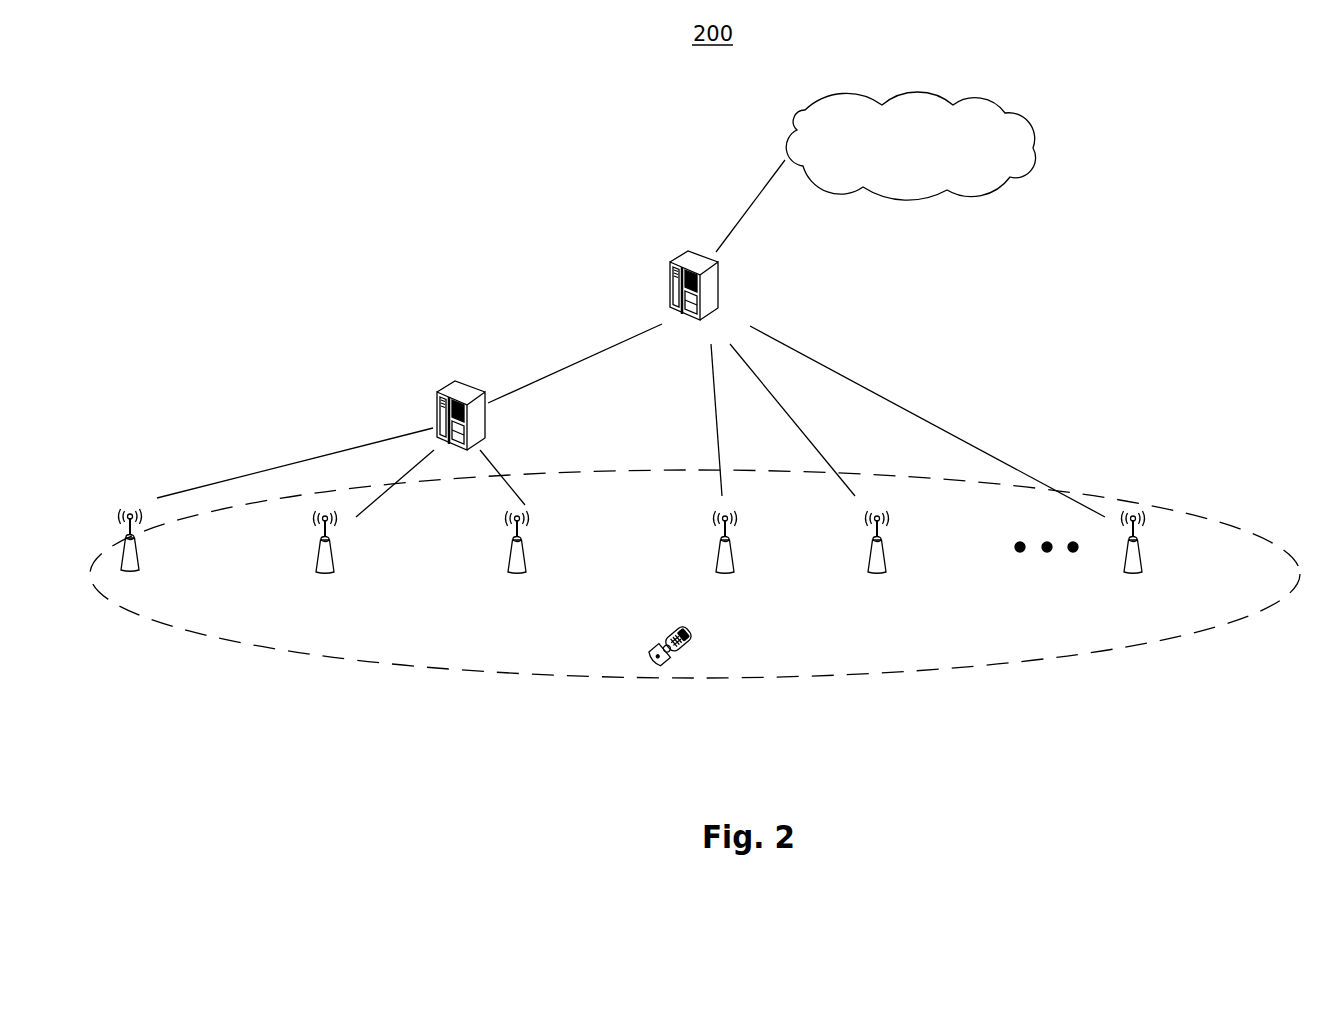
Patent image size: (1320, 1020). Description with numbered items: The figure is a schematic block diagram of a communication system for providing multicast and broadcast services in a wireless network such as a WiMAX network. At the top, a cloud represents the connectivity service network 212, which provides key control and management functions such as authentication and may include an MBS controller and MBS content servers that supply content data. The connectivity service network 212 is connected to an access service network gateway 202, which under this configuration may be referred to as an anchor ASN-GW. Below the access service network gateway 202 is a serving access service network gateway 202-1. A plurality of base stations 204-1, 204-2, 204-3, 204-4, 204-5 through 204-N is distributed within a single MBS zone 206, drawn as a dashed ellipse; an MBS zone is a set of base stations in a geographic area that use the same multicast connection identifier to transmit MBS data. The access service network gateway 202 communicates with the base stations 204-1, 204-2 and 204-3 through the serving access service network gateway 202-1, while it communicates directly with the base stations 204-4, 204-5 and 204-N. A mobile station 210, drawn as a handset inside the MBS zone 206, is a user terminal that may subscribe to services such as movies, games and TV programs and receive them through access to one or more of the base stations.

The access service network gateway 202 is at (723, 290).
The serving access service network gateway 202-1 is at (490, 423).
The base station 204-1 is at (140, 552).
The base station 204-2 is at (334, 547).
The base station 204-3 is at (526, 550).
The base station 204-4 is at (735, 551).
The base station 204-5 is at (886, 551).
The base station 204-N is at (1142, 551).
The MBS zone 206 is at (1137, 650).
The mobile station 210 is at (700, 636).
The connectivity service network 212 is at (1046, 151).